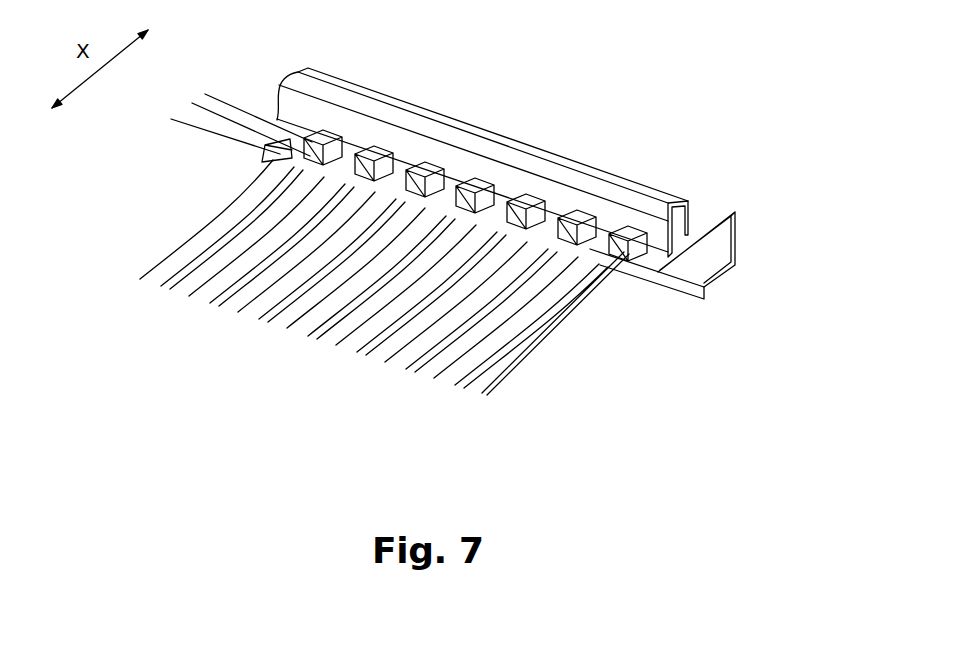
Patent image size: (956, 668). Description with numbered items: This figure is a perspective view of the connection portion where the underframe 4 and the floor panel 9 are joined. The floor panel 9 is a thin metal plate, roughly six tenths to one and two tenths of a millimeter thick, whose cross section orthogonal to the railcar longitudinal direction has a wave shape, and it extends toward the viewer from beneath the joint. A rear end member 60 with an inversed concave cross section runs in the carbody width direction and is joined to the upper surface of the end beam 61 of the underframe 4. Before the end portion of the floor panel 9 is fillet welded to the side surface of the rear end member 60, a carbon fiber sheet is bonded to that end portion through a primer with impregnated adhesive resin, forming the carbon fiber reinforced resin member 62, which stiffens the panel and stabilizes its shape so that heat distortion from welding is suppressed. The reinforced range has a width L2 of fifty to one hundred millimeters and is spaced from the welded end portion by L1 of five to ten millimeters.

The underframe 4 is at (668, 235).
The floor panel 9 is at (535, 353).
The rear end member 60 is at (580, 178).
The end beam 61 is at (737, 230).
The carbon fiber reinforced resin member 62 is at (612, 270).
The spacing from end portion L1 is at (163, 147).
The width of reinforced range L2 is at (207, 149).